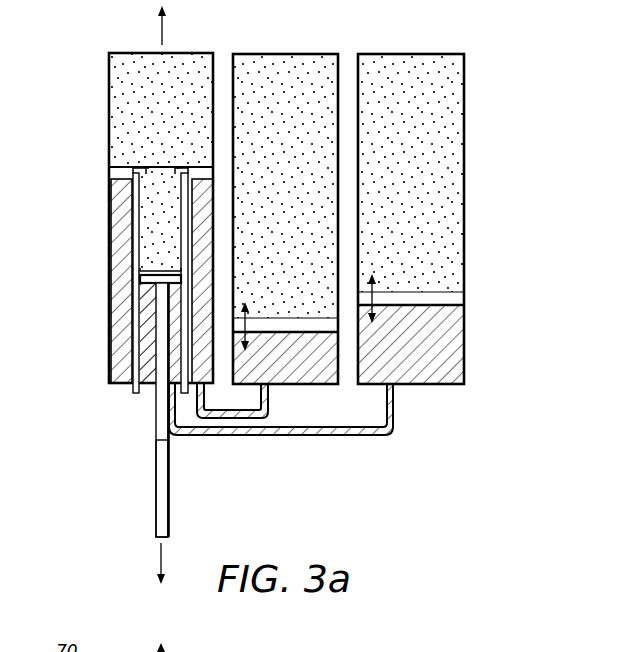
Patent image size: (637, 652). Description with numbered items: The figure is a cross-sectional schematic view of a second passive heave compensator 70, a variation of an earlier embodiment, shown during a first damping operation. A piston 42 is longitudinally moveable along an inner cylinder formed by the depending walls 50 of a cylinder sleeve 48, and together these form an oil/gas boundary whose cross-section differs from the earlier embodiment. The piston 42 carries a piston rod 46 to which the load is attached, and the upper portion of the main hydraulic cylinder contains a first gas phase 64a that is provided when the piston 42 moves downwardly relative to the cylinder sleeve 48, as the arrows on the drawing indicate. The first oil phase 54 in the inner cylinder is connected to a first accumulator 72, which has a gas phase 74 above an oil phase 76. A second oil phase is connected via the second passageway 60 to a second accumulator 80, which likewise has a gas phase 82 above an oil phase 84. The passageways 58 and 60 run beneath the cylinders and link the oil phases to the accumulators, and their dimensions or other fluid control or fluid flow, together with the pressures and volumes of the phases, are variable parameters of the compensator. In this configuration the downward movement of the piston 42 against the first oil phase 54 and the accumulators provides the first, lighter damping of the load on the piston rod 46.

The second passive heave compensator 70 is at (103, 40).
The first gas phase 64a is at (120, 93).
The cylinder sleeve 48 is at (120, 172).
The depending walls 50 is at (135, 302).
The first oil phase 54 is at (148, 358).
The piston 42 is at (156, 407).
The piston rod 46 is at (156, 521).
The gas phase 82 is at (287, 55).
The second accumulator 80 is at (338, 175).
The oil phase 84 is at (305, 370).
The gas phase 74 is at (455, 102).
The first accumulator 72 is at (466, 177).
The oil phase 76 is at (455, 340).
The second passageway 60 is at (215, 437).
The passageway 58 is at (286, 437).